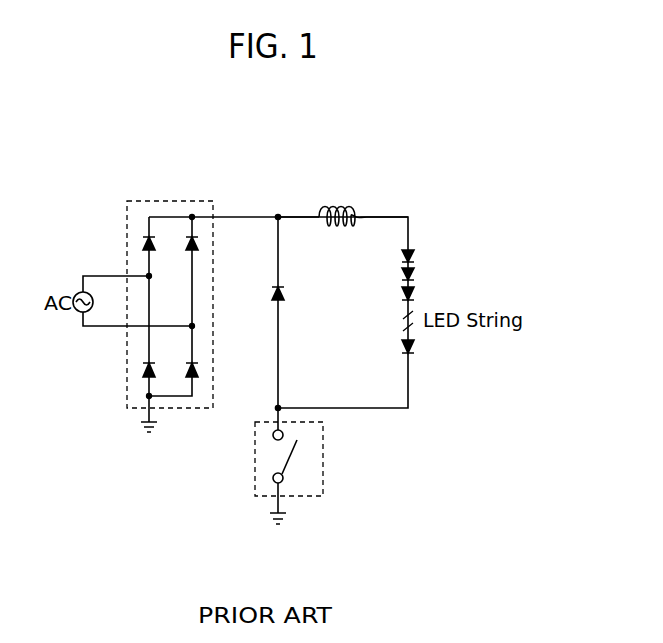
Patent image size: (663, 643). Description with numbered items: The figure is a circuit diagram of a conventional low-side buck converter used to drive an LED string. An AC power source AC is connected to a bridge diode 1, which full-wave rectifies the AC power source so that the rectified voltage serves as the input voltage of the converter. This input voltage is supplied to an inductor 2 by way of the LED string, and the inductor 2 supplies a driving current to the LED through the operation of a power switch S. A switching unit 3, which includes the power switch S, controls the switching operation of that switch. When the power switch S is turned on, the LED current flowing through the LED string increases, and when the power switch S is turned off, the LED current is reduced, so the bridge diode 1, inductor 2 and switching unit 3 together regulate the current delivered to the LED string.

The bridge diode 1 is at (127, 395).
The inductor 2 is at (357, 201).
The switching unit 3 is at (255, 483).